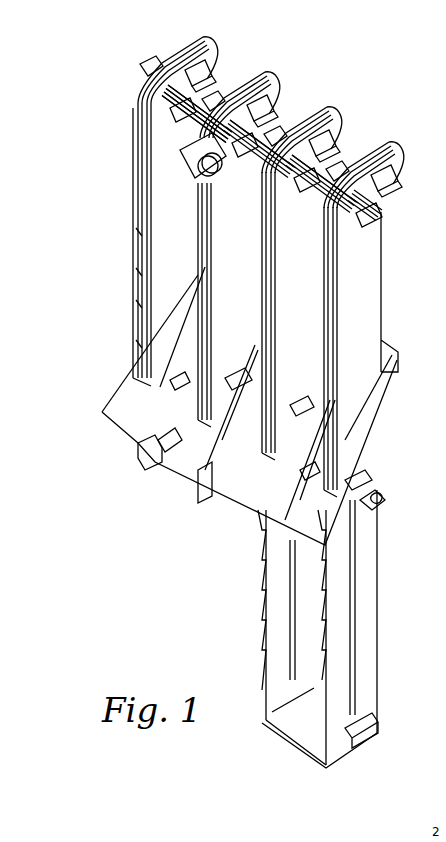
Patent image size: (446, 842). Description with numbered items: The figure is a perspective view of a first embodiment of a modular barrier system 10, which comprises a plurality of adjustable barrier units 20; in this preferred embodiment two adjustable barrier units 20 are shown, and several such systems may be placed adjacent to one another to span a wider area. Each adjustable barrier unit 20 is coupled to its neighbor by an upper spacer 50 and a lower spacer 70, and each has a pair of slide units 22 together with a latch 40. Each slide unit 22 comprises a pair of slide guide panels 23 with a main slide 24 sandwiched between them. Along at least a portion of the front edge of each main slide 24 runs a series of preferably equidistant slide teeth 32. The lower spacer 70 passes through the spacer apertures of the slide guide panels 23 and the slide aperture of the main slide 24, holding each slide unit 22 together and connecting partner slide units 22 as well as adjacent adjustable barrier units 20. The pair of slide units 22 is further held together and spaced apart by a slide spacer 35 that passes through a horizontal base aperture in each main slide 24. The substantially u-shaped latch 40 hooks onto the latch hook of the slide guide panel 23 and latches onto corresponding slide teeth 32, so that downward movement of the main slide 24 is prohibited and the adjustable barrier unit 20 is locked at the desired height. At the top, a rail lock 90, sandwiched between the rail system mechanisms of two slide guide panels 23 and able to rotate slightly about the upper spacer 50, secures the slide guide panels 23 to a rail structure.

The modular barrier system 10 is at (374, 60).
The adjustable barrier unit 20 is at (200, 25).
The slide unit 22 is at (136, 206).
The slide guide panel 23 is at (362, 258).
The main slide 24 is at (367, 637).
The slide teeth 32 is at (258, 637).
The slide spacer 35 is at (310, 747).
The latch 40 is at (262, 500).
The upper spacer 50 is at (275, 123).
The lower spacer 70 is at (373, 500).
The rail lock 90 is at (195, 173).